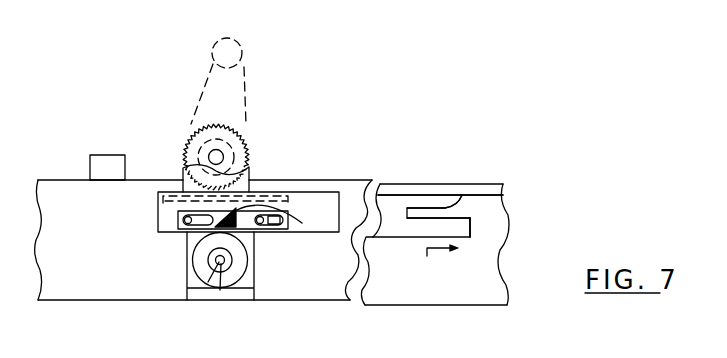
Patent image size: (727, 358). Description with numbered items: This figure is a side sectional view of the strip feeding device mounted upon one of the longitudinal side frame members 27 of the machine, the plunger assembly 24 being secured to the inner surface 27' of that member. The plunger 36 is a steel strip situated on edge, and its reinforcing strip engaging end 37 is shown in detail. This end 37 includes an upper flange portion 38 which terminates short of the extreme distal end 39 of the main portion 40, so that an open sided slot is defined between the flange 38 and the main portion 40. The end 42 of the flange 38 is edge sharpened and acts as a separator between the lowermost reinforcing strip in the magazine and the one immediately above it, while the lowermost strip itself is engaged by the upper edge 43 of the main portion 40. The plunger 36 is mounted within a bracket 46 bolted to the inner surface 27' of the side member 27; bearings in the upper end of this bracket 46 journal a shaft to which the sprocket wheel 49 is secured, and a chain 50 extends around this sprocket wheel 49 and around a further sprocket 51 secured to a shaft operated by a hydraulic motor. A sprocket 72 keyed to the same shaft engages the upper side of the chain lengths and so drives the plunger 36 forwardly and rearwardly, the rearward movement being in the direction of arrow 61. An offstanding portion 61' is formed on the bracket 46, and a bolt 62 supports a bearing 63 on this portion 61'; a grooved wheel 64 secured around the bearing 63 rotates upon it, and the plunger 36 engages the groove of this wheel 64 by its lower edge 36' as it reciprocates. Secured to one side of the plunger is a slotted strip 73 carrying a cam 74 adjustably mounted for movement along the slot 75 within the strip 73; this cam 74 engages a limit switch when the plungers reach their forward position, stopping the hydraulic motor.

The plunger assembly 24 is at (316, 208).
The longitudinal side frame member 27 is at (199, 269).
The inner surface 27' is at (121, 255).
The plunger 36 is at (435, 244).
The lower edge 36' is at (219, 207).
The reinforcing strip engaging end 37 is at (456, 233).
The upper flange portion 38 is at (410, 197).
The extreme distal end 39 is at (468, 221).
The main portion 40 is at (468, 227).
The end of flange 42 is at (457, 195).
The upper edge 43 is at (469, 218).
The bracket 46 is at (186, 247).
The sprocket wheel 49 is at (243, 135).
The chain 50 is at (247, 90).
The sprocket 51 is at (240, 47).
The arrow 61 is at (445, 267).
The offstanding portion 61' is at (248, 262).
The bolt 62 is at (221, 261).
The bearing 63 is at (208, 282).
The grooved wheel 64 is at (220, 290).
The sprocket 72 is at (230, 172).
The slotted strip 73 is at (190, 213).
The cam 74 is at (285, 221).
The slot 75 is at (268, 224).